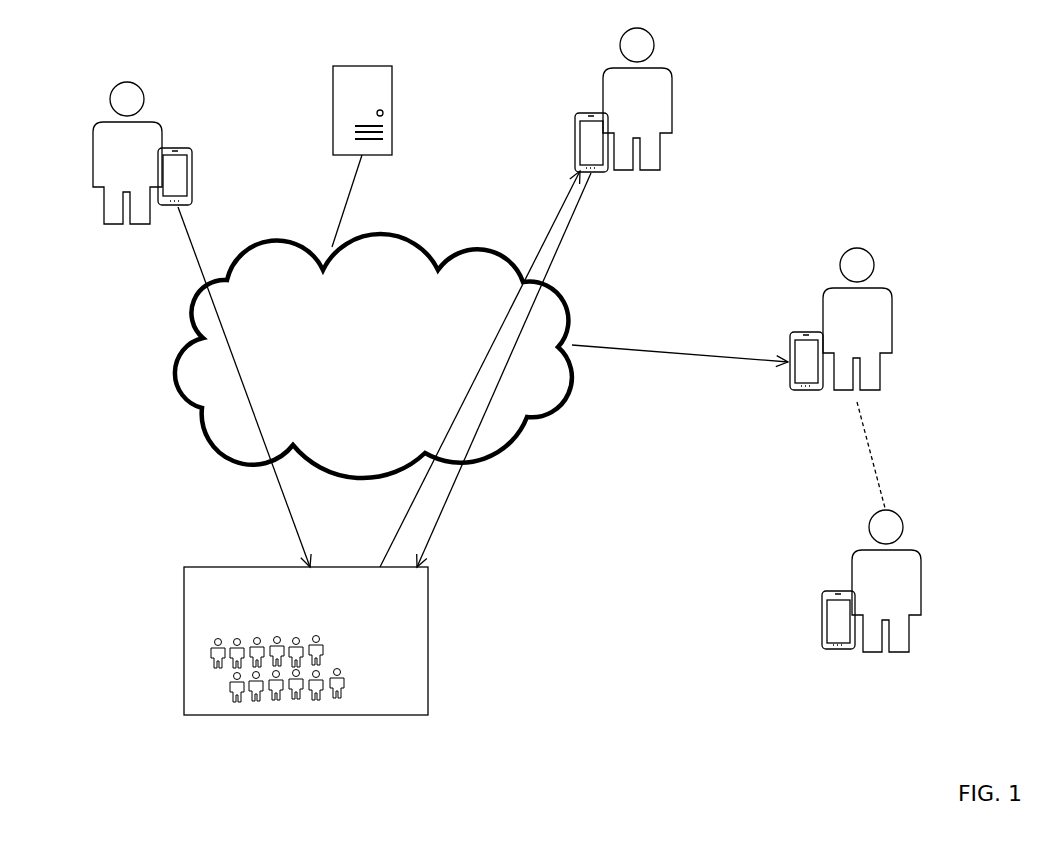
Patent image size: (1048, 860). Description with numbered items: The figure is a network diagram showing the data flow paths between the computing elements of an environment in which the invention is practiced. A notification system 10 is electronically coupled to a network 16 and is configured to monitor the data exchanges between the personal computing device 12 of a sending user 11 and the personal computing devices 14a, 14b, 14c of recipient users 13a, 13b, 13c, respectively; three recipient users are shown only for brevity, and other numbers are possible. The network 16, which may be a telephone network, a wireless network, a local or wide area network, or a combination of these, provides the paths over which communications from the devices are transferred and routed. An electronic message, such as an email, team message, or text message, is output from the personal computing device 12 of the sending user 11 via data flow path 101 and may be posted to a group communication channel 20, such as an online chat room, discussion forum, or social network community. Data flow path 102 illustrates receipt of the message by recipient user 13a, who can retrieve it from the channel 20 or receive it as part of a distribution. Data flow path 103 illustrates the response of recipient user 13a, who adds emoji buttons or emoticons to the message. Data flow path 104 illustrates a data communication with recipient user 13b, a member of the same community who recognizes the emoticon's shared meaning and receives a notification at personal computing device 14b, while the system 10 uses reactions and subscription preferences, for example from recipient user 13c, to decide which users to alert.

The notification system 10 is at (370, 66).
The sending user 11 is at (92, 125).
The personal computing device 12 is at (177, 143).
The recipient user 13a is at (657, 25).
The recipient user 13b is at (872, 253).
The recipient user 13c is at (903, 510).
The personal computing device 14a is at (592, 113).
The personal computing device 14b is at (797, 328).
The personal computing device 14c is at (835, 590).
The network 16 is at (373, 370).
The group communication channel 20 is at (184, 642).
The data flow path 101 is at (190, 243).
The data flow path 102 is at (410, 500).
The data flow path 103 is at (458, 473).
The data flow path 104 is at (670, 352).